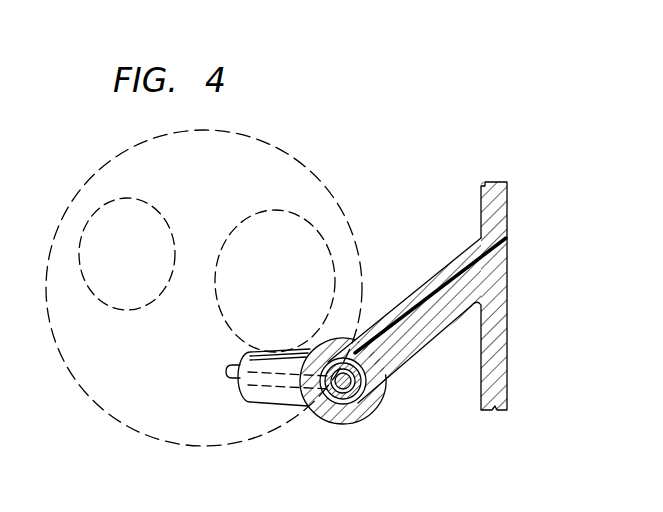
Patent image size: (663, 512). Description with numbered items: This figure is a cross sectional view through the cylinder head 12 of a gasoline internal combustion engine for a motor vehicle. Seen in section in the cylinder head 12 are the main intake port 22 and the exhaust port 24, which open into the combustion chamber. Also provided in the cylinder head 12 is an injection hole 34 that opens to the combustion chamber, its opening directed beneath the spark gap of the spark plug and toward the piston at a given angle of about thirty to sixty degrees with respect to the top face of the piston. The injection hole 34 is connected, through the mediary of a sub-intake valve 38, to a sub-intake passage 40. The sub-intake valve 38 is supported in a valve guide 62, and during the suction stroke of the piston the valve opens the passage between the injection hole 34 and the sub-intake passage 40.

The cylinder head 12 is at (415, 352).
The main intake port 22 is at (287, 216).
The exhaust port 24 is at (125, 198).
The injection hole 34 is at (287, 388).
The sub-intake valve 38 is at (363, 392).
The sub-intake passage 40 is at (455, 283).
The valve guide 62 is at (345, 405).